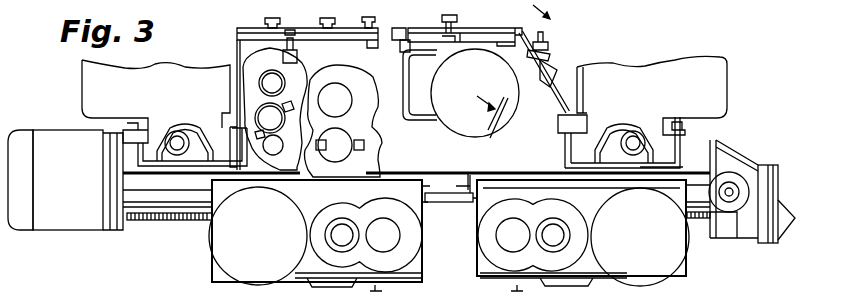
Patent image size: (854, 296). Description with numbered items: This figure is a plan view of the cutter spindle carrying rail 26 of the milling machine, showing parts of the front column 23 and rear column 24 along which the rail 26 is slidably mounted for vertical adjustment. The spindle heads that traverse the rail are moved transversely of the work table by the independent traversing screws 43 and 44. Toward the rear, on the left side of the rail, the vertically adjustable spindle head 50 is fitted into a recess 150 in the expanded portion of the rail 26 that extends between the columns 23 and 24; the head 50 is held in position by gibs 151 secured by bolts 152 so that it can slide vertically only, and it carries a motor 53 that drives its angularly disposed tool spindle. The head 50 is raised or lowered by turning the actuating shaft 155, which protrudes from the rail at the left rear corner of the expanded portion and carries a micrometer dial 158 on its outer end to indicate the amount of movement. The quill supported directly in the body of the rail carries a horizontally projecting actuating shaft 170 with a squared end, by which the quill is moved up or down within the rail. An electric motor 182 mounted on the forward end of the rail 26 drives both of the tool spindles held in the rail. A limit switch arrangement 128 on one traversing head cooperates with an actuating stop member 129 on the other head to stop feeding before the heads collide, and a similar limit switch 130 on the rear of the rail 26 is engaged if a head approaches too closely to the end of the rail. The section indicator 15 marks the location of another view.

The front column 23 is at (94, 95).
The rear column 24 is at (718, 77).
The electric motor 182 is at (60, 149).
The traversing screw 43 is at (152, 222).
The traversing screw 44 is at (704, 222).
The actuating shaft 170 is at (288, 33).
The bolts 152 is at (395, 32).
The gibs 151 is at (396, 52).
The spindle head 50 is at (480, 62).
The section line 15 is at (540, 36).
The actuating shaft 155 is at (548, 44).
The micrometer dial 158 is at (541, 60).
The recess 150 is at (420, 125).
The motor 53 is at (456, 123).
The limit switch arrangement 128 is at (478, 166).
The actuating stop member 129 is at (423, 195).
The cutter spindle carrying rail 26 is at (447, 200).
The limit switch 130 is at (703, 178).